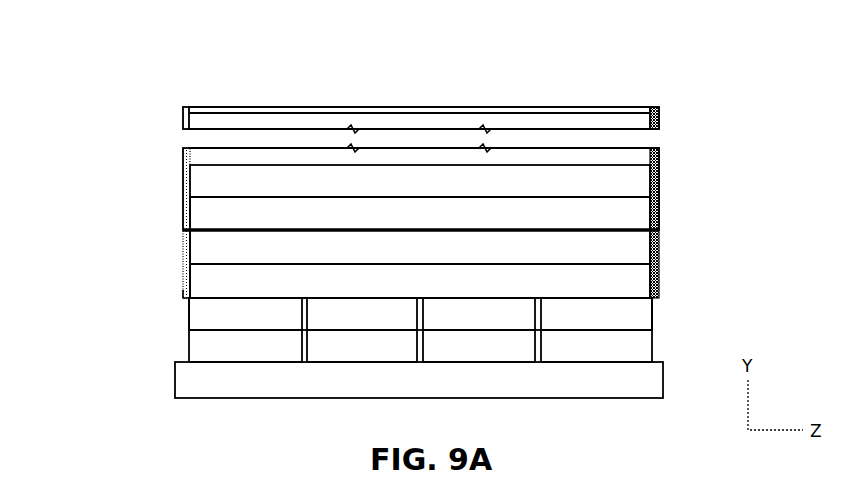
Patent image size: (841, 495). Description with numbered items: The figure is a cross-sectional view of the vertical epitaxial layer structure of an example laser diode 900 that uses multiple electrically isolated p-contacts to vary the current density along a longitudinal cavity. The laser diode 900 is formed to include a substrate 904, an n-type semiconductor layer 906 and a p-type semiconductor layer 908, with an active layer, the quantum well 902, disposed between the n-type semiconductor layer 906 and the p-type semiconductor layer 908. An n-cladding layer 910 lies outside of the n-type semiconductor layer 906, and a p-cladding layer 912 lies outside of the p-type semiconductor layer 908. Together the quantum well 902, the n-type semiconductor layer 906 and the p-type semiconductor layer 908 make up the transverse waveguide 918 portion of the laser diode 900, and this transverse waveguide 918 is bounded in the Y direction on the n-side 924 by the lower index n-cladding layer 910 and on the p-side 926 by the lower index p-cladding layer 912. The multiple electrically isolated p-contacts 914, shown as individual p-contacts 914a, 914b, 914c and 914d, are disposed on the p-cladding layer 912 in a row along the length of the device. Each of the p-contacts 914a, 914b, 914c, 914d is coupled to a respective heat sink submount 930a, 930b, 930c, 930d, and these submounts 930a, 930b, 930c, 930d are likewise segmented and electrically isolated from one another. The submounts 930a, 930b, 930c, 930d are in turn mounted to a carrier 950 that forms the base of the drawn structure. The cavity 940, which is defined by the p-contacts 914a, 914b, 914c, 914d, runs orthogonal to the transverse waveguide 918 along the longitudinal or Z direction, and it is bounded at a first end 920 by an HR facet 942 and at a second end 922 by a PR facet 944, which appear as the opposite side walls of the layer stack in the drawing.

The laser diode 900 is at (45, 82).
The quantum well 902 is at (607, 228).
The substrate 904 is at (183, 115).
The n-type semiconductor layer 906 is at (420, 213).
The p-type semiconductor layer 908 is at (420, 247).
The n-cladding layer 910 is at (420, 181).
The p-cladding layer 912 is at (420, 281).
The multiple electrically isolated p-contacts 914 is at (455, 107).
The first electrically isolated p-contact 914a is at (245, 314).
The second electrically isolated p-contact 914b is at (362, 314).
The third electrically isolated p-contact 914c is at (479, 314).
The fourth electrically isolated p-contact 914d is at (596, 314).
The transverse waveguide 918 is at (172, 198).
The first end 920 is at (183, 107).
The second end 922 is at (672, 107).
The n-side 924 is at (665, 107).
The p-side 926 is at (660, 240).
The first heat sink submount 930a is at (245, 346).
The second heat sink submount 930b is at (362, 346).
The third heat sink submount 930c is at (479, 346).
The fourth heat sink submount 930d is at (596, 346).
The cavity 940 is at (187, 298).
The HR facet 942 is at (183, 205).
The PR facet 944 is at (659, 232).
The carrier 950 is at (419, 380).